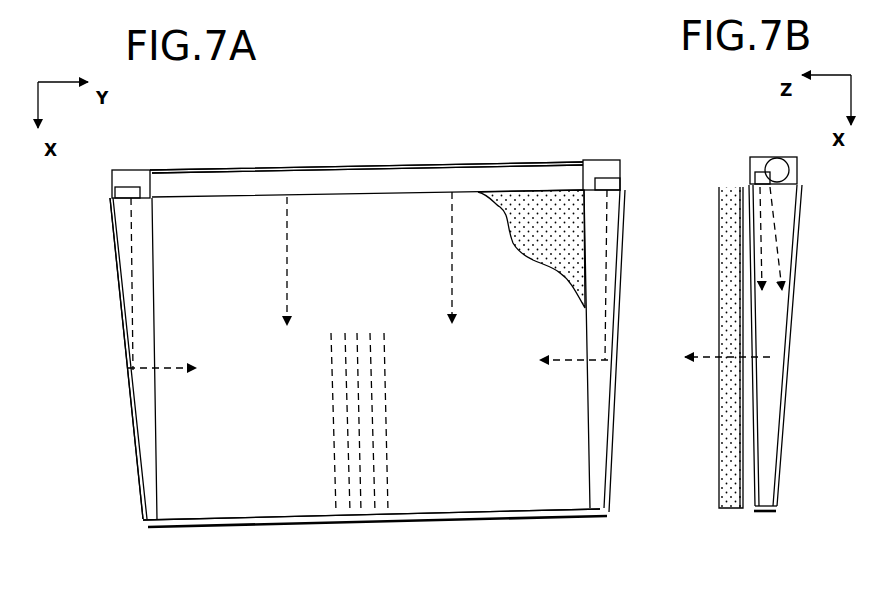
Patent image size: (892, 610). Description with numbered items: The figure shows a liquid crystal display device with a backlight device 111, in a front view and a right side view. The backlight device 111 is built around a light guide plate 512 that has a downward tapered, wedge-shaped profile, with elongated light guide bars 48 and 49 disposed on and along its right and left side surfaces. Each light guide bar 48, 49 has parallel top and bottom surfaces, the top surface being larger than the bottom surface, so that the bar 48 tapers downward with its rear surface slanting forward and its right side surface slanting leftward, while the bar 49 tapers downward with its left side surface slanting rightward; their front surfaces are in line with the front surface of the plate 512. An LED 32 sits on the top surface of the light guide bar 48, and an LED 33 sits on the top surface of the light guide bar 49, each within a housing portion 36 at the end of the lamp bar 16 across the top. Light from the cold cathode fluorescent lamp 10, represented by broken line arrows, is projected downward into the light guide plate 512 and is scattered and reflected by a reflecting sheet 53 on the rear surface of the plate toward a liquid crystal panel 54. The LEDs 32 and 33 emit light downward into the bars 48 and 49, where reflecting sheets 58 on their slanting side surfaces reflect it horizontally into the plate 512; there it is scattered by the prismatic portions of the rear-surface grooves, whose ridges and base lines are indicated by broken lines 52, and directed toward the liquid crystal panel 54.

In FIG. 7A, the cold cathode fluorescent lamp 10 is at (440, 172).
In FIG. 7B, the cold cathode fluorescent lamp 10 is at (770, 168).
In FIG. 7A, the light source bar 16 is at (536, 163).
In FIG. 7A, the LED 32 is at (620, 183).
In FIG. 7B, the LED 32 is at (755, 178).
In FIG. 7A, the LED 33 is at (118, 192).
In FIG. 7A, the light source housing 36 is at (133, 168).
In FIG. 7B, the light source housing 36 is at (760, 160).
In FIG. 7A, the light guide bar 48 is at (600, 425).
In FIG. 7B, the light guide bar 48 is at (778, 440).
In FIG. 7A, the light guide bar 49 is at (142, 381).
In FIG. 7A, the broken lines 52 is at (375, 498).
In FIG. 7B, the reflecting sheet 53 is at (792, 385).
In FIG. 7A, the liquid crystal panel 54 is at (568, 248).
In FIG. 7B, the liquid crystal panel 54 is at (735, 490).
In FIG. 7A, the reflecting sheet 58 is at (142, 495).
In FIG. 7B, the reflecting sheet 58 is at (765, 515).
In FIG. 7A, the backlight device 111 is at (120, 440).
In FIG. 7A, the light guide plate 512 is at (305, 510).